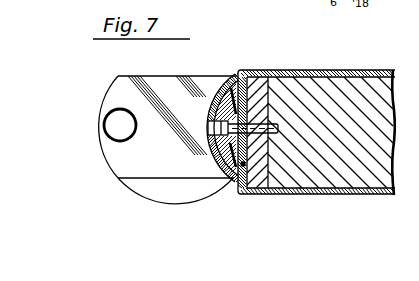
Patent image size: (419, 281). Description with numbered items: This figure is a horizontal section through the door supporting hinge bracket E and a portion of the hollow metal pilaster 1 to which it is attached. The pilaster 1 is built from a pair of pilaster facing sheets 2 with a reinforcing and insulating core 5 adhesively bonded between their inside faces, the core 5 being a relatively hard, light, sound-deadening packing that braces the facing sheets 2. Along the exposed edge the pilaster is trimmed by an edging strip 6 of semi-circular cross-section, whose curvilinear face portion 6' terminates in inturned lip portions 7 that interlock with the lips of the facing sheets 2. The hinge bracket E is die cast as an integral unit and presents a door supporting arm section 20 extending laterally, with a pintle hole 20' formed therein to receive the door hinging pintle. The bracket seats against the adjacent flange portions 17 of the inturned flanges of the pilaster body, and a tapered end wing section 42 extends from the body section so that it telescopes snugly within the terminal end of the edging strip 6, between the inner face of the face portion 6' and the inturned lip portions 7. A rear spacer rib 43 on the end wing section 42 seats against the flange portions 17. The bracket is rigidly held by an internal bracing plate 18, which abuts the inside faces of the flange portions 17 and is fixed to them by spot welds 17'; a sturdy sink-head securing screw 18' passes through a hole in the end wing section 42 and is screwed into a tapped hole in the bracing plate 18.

The door supporting arm section 20 is at (132, 140).
The pintle hole 20' is at (82, 103).
The door supporting hinge bracket E is at (81, 165).
The inturned lip portions 7 is at (231, 84).
The tapered end wing section 42 is at (222, 93).
The rear spacer rib 43 is at (214, 147).
The edging strip 6 is at (229, 116).
The face portion of edging strip 6' is at (204, 126).
The flange portions 17 is at (225, 127).
The spot welds 17' is at (250, 130).
The internal bracing plate 18 is at (275, 113).
The securing screws 18' is at (302, 78).
The pilaster facing sheets 2 is at (355, 70).
The reinforcing and insulating core 5 is at (387, 118).
The floor supported pilaster 1 is at (300, 196).